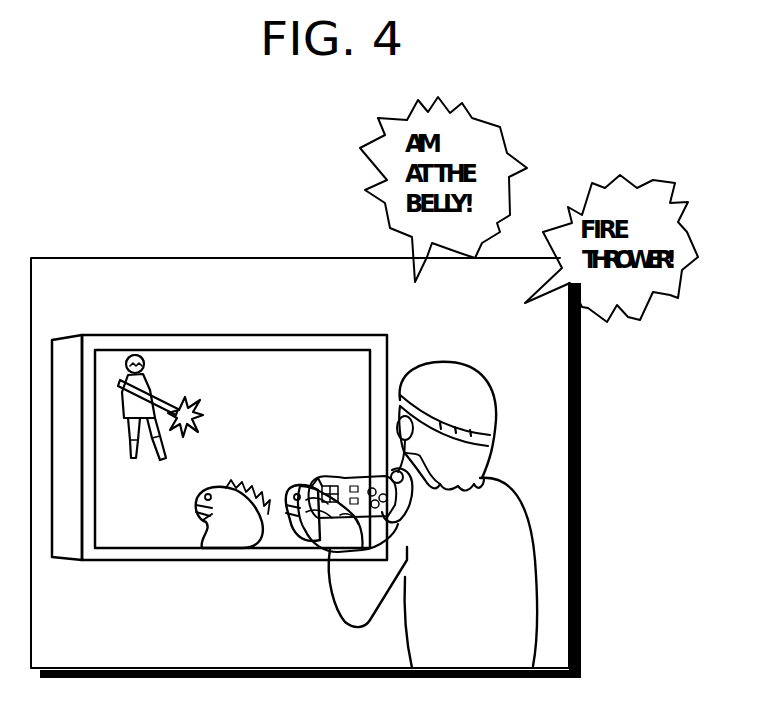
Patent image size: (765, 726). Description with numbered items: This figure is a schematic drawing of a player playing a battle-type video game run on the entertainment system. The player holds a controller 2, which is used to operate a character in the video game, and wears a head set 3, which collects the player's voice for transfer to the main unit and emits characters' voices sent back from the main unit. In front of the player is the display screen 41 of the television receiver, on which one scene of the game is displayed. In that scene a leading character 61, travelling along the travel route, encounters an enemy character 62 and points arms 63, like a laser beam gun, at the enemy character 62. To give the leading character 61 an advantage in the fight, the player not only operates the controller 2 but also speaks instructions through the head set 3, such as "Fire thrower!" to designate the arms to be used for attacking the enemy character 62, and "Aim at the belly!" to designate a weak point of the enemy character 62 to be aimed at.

The controller 2 is at (342, 480).
The head set 3 is at (390, 468).
The display screen 41 is at (161, 540).
The leading character 61 is at (180, 392).
The enemy character 62 is at (290, 482).
The arms 63 is at (214, 418).